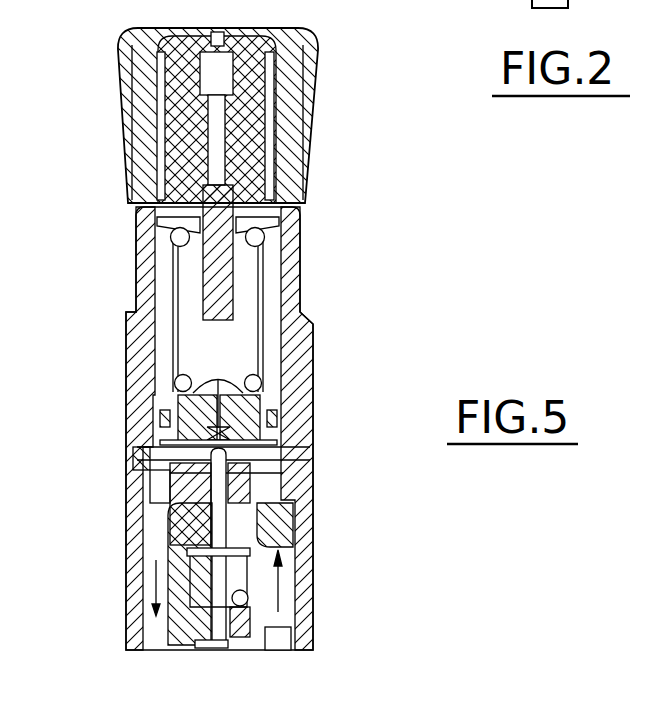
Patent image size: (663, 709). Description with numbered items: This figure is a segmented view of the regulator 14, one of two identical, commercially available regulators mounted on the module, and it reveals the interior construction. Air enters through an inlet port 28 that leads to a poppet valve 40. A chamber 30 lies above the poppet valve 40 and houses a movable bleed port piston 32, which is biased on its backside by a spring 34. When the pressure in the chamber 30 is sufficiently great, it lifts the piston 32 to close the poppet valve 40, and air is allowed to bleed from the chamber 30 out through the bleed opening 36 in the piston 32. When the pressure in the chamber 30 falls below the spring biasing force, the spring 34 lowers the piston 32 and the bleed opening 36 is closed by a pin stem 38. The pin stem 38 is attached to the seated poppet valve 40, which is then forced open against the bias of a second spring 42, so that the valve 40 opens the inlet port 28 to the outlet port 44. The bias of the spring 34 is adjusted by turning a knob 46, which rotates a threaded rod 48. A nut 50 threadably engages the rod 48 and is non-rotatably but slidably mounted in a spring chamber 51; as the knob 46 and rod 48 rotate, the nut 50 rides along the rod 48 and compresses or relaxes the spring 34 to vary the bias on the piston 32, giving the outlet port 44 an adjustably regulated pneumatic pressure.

The regulator 14 is at (324, 281).
The knob 46 is at (131, 52).
The threaded rod 48 is at (198, 172).
The nut 50 is at (151, 231).
The spring chamber 51 is at (160, 283).
The spring 34 is at (182, 347).
The bleed port piston 32 is at (165, 381).
The bleed opening 36 is at (140, 452).
The chamber 30 is at (215, 447).
The pin stem 38 is at (240, 484).
The poppet valve 40 is at (247, 566).
The second spring 42 is at (243, 606).
The outlet port 44 is at (150, 628).
The inlet port 28 is at (285, 625).